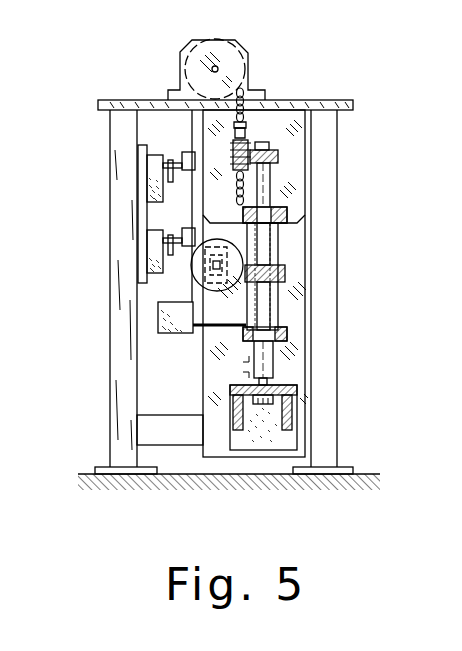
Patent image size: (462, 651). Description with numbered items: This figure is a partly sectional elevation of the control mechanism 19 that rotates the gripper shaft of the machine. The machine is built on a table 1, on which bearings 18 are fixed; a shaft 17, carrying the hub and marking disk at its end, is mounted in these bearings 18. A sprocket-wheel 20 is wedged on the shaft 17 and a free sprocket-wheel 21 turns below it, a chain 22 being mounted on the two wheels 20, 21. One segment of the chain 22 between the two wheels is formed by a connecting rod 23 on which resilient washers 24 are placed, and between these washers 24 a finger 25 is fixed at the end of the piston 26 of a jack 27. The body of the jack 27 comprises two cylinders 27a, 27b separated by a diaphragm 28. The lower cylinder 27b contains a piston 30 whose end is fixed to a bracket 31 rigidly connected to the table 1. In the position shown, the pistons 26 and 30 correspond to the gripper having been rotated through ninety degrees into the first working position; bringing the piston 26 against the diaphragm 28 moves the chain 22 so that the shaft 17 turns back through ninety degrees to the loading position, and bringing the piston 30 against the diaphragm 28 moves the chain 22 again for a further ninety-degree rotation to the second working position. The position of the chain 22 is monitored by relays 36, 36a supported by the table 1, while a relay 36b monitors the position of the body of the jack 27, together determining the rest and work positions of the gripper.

The table 1 is at (355, 104).
The shaft 17 is at (222, 51).
The bearings 18 is at (250, 68).
The control mechanism 19 is at (163, 358).
The sprocket-wheel 20 is at (193, 82).
The free sprocket-wheel 21 is at (196, 272).
The chain 22 is at (143, 146).
The connecting rod 23 is at (248, 132).
The resilient washers 24 is at (240, 167).
The finger 25 is at (277, 156).
The piston 26 is at (272, 196).
The jack 27 is at (283, 254).
The cylinder 27a is at (286, 236).
The cylinder 27b is at (284, 328).
The diaphragm 28 is at (284, 273).
The piston 30 is at (275, 368).
The bracket 31 is at (275, 396).
The relay 36 is at (188, 158).
The relay 36a is at (148, 232).
The relay 36b is at (184, 333).